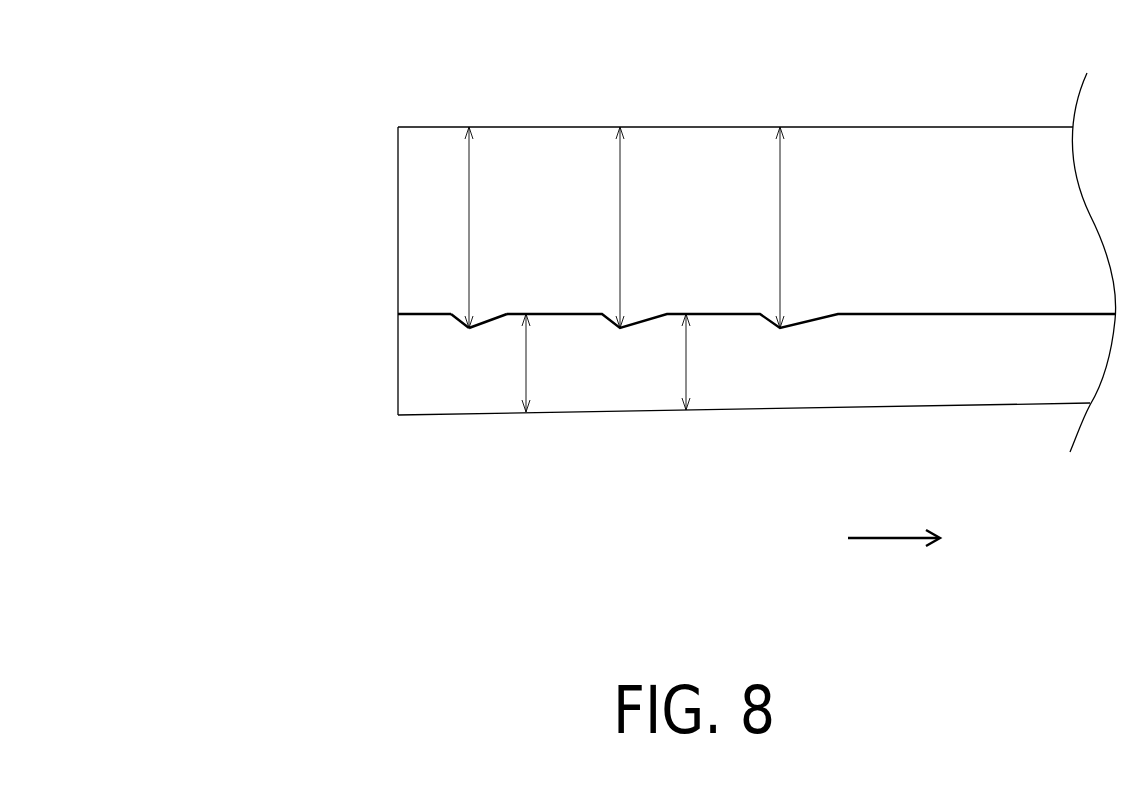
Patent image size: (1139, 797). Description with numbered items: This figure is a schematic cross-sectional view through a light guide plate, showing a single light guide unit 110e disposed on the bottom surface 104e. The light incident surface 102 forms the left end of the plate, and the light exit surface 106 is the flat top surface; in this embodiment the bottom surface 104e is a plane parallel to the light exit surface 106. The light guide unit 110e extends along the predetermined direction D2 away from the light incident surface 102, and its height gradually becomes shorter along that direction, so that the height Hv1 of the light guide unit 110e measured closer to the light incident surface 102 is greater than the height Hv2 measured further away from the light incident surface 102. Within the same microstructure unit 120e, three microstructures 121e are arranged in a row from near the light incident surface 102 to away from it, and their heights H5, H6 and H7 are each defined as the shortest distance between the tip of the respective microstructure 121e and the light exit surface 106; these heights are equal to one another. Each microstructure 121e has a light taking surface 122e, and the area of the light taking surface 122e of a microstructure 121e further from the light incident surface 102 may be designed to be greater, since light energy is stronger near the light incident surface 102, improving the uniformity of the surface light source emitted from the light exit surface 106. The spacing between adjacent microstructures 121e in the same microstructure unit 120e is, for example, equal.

The light incident surface 102 is at (398, 145).
The bottom surface 104e is at (684, 374).
The light exit surface 106 is at (552, 127).
The light guide unit 110e is at (780, 410).
The microstructure unit 120e is at (427, 408).
The microstructure 121e is at (469, 330).
The light taking surface 122e is at (487, 323).
The height of the first microstructure H5 is at (469, 176).
The height of the second microstructure H6 is at (620, 177).
The height of the third microstructure H7 is at (780, 177).
The height of the light guide unit near the light incident surface Hv1 is at (526, 370).
The height of the light guide unit away from the light incident surface Hv2 is at (686, 373).
The predetermined direction D2 is at (894, 554).